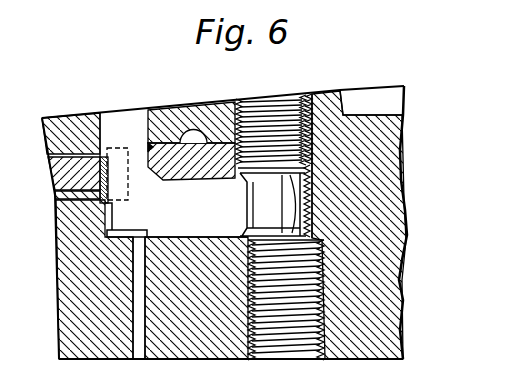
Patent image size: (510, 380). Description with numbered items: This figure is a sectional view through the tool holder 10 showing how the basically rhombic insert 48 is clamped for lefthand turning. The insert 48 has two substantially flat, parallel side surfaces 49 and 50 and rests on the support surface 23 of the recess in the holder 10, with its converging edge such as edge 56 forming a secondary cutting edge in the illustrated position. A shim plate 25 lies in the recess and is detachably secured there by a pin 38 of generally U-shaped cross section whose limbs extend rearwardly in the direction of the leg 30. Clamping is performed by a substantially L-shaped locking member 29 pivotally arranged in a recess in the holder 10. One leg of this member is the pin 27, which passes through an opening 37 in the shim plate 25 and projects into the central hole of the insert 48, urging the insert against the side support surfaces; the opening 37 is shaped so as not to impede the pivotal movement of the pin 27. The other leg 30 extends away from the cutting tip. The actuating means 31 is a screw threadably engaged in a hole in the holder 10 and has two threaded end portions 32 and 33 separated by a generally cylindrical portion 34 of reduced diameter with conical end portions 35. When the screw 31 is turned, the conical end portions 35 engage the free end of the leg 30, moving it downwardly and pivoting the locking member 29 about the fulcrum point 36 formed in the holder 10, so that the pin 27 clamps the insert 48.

The holder 10 is at (367, 160).
The edge 56 is at (42, 117).
The flat side surface 50 is at (60, 157).
The support surface 23 is at (60, 190).
The pin 38 is at (104, 199).
The L-shaped locking member 29 is at (113, 203).
The fulcrum point 36 is at (133, 236).
The leg 30 is at (228, 212).
The pin 27 is at (117, 122).
The flat side surface 49 is at (149, 147).
The opening 37 is at (184, 118).
The insert 48 is at (193, 118).
The shim plate 25 is at (208, 142).
The actuating means 31 is at (262, 127).
The threaded end portion 32 is at (298, 125).
The cylindrical portion 34 is at (284, 210).
The conical end portions 35 is at (305, 182).
The threaded end portion 33 is at (323, 314).